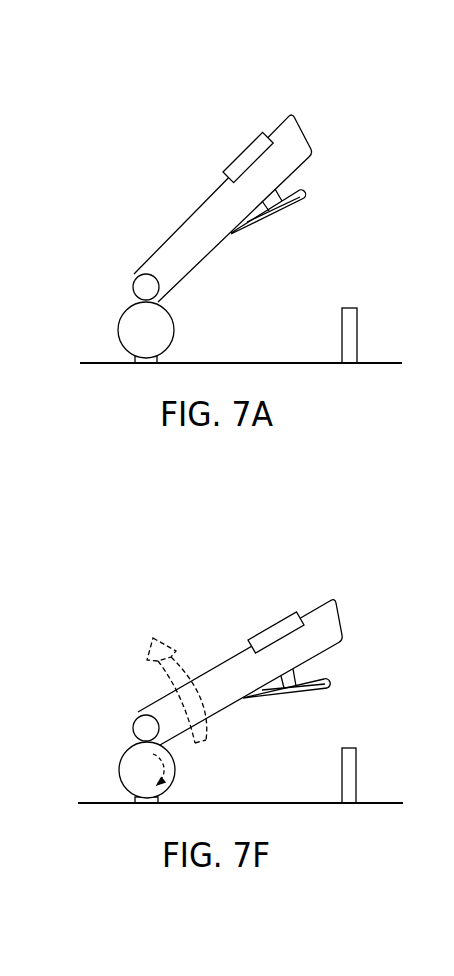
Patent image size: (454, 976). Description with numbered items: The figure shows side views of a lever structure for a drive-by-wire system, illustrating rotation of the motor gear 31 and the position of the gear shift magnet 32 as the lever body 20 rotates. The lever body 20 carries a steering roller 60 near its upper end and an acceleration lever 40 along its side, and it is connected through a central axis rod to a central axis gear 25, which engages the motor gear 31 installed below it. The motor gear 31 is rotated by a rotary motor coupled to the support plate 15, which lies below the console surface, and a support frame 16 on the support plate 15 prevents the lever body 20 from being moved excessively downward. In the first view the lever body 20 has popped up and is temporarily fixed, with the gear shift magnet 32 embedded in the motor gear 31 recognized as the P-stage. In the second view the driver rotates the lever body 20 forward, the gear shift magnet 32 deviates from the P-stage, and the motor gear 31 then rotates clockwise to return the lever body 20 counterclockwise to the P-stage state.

In FIG. 7A, the support plate 15 is at (382, 363).
In FIG. 7F, the support plate 15 is at (382, 803).
In FIG. 7A, the support frame 16 is at (350, 325).
In FIG. 7F, the support frame 16 is at (348, 767).
In FIG. 7A, the lever body 20 is at (198, 204).
In FIG. 7F, the lever body 20 is at (232, 660).
In FIG. 7A, the central axis gear 25 is at (138, 278).
In FIG. 7F, the central axis gear 25 is at (146, 724).
In FIG. 7A, the motor gear 31 is at (143, 327).
In FIG. 7F, the motor gear 31 is at (142, 768).
In FIG. 7A, the gear shift magnet 32 is at (133, 297).
In FIG. 7F, the gear shift magnet 32 is at (146, 724).
In FIG. 7A, the acceleration lever 40 is at (306, 210).
In FIG. 7F, the acceleration lever 40 is at (328, 683).
In FIG. 7A, the steering roller 60 is at (245, 151).
In FIG. 7F, the steering roller 60 is at (284, 617).